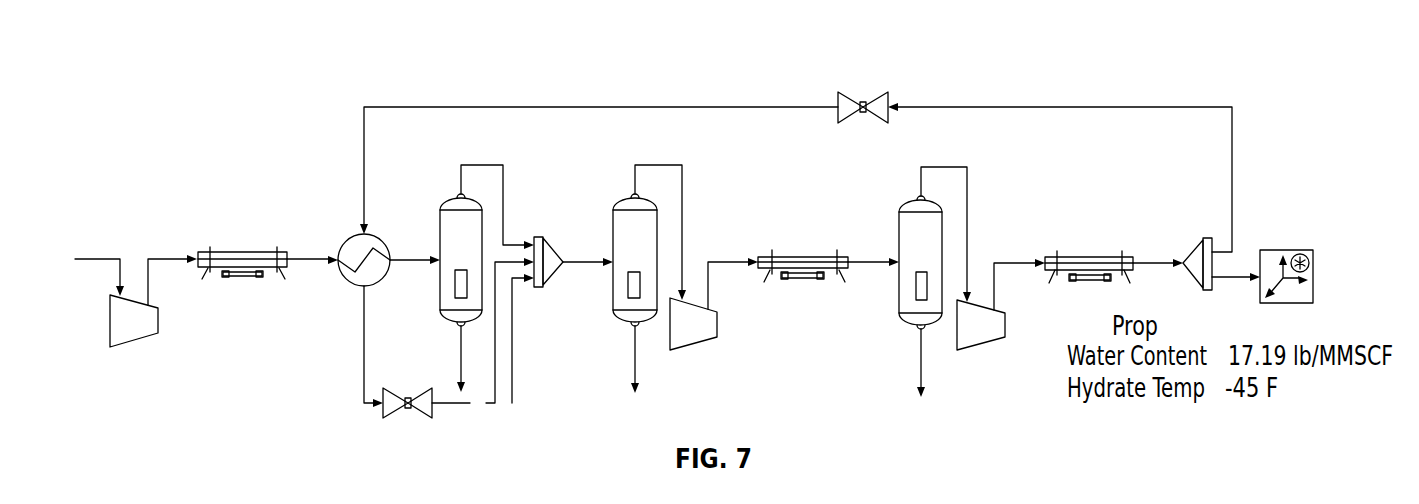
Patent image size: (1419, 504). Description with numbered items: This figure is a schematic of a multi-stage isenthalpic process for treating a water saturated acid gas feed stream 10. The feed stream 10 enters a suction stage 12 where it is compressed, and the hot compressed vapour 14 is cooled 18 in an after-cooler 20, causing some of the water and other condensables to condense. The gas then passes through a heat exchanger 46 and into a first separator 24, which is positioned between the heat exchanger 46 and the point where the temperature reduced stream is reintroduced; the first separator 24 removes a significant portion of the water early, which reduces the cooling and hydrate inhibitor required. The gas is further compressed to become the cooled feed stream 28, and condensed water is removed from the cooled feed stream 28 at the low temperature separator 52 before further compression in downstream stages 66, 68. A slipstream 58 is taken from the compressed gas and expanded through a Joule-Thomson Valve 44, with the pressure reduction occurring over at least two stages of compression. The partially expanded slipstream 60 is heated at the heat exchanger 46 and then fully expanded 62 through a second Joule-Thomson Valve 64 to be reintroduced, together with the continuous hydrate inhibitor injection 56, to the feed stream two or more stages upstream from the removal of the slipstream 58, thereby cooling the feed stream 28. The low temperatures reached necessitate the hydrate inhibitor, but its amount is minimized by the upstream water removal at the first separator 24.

The water saturated acid gas feed stream 10 is at (98, 258).
The suction stage 12 is at (133, 343).
The hot compressed vapour 14 is at (167, 258).
The cooled stream 18 is at (300, 261).
The after-cooler 20 is at (242, 252).
The first separator 24 is at (448, 198).
The cooled feed stream 28 is at (582, 263).
The Joule-Thomson Valve 44 is at (866, 100).
The heat exchanger 46 is at (348, 238).
The low temperature separator 52 is at (622, 200).
The continuous hydrate inhibitor injection 56 is at (512, 358).
The slipstream 58 is at (1063, 107).
The partially expanded slipstream 60 is at (713, 107).
The fully expanded slipstream 62 is at (470, 403).
The Joule-Thomson Valve 64 is at (408, 397).
The compression stage 66 is at (717, 322).
The compression stage 68 is at (980, 351).